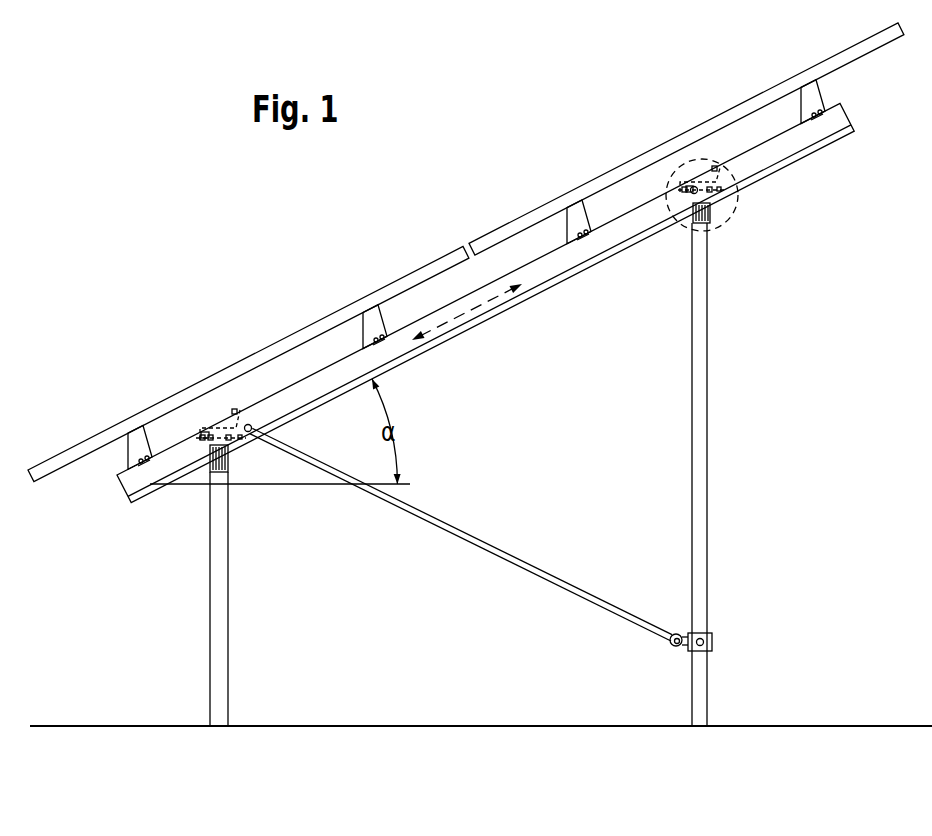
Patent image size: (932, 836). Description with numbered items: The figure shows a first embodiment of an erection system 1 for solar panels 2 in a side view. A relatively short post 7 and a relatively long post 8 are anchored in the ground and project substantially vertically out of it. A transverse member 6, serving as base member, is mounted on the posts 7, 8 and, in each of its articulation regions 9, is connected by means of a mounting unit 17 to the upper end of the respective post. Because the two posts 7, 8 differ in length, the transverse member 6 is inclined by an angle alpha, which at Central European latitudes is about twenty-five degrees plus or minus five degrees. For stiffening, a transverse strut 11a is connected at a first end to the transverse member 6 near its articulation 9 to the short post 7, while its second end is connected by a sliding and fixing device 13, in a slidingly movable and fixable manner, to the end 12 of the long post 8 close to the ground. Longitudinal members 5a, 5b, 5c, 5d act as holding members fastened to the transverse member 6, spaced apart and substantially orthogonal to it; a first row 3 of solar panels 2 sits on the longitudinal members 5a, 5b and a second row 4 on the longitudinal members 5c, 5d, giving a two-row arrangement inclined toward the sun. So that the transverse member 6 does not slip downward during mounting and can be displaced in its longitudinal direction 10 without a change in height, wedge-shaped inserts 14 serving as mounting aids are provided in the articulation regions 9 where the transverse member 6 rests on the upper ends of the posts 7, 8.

The erection system 1 is at (548, 446).
The solar panels 2 is at (256, 350).
The first row of solar panels 3 is at (403, 276).
The second row of solar panels 4 is at (497, 226).
The longitudinal member 5a is at (128, 440).
The longitudinal member 5b is at (362, 322).
The longitudinal member 5c is at (567, 212).
The longitudinal member 5d is at (801, 105).
The transverse member 6 is at (553, 285).
The relatively short post 7 is at (210, 620).
The relatively long post 8 is at (708, 452).
The articulation region 9 is at (230, 455).
The longitudinal direction 10 is at (474, 312).
The transverse strut 11a is at (491, 554).
The end of the relatively long post close to the ground 12 is at (708, 672).
The sliding and fixing device 13 is at (716, 636).
The insert 14 is at (222, 425).
The mounting unit 17 is at (206, 447).